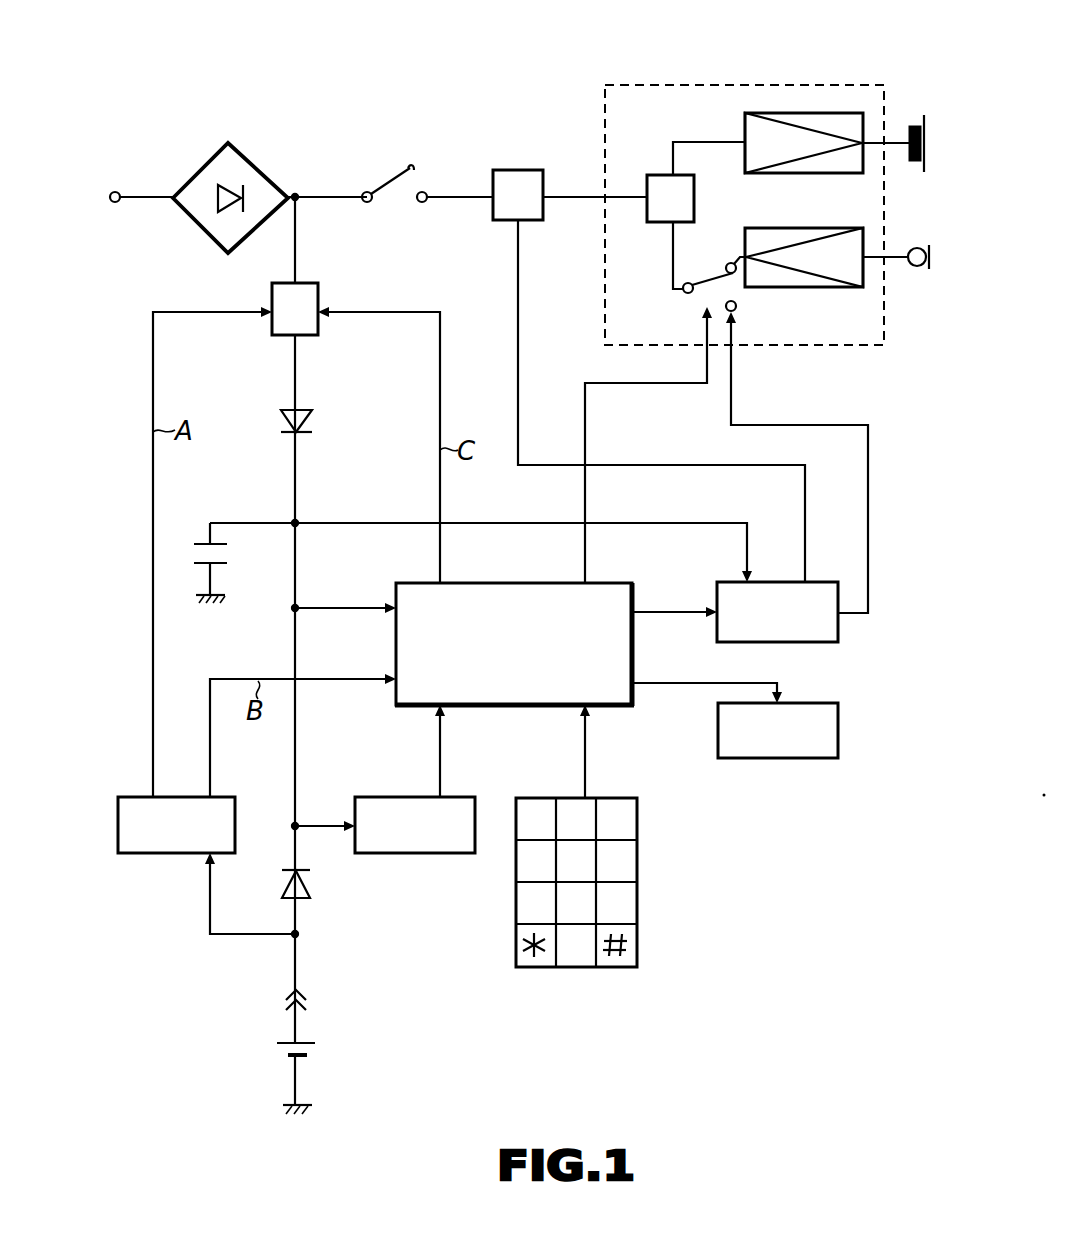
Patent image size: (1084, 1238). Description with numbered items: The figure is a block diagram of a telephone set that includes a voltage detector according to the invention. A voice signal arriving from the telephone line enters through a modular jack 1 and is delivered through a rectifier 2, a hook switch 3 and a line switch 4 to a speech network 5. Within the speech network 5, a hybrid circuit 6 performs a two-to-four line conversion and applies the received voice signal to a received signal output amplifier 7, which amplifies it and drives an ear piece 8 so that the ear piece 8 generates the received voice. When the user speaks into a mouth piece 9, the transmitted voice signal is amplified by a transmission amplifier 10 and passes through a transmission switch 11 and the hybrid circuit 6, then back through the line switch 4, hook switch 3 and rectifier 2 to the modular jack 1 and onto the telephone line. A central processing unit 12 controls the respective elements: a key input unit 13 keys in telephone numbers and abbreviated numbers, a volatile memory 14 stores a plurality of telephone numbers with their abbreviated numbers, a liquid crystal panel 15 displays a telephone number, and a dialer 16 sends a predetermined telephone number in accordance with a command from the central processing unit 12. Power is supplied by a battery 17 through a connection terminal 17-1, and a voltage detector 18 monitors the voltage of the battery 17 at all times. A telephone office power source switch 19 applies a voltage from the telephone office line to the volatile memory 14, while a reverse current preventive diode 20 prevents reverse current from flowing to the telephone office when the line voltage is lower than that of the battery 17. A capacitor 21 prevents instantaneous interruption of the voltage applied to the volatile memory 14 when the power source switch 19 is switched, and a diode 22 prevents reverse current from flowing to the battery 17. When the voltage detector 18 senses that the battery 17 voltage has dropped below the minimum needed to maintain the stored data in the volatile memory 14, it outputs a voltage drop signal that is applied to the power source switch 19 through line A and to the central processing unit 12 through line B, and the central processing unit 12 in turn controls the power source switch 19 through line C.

The modular jack 1 is at (141, 166).
The rectifier 2 is at (230, 187).
The hook switch 3 is at (394, 158).
The line switch 4 is at (518, 169).
The speech network 5 is at (744, 176).
The hybrid circuit 6 is at (658, 160).
The received signal output amplifier 7 is at (795, 160).
The ear piece 8 is at (924, 106).
The mouth piece 9 is at (918, 232).
The transmission amplifier 10 is at (804, 279).
The transmission switch 11 is at (683, 271).
The central processing unit 12 is at (538, 662).
The key input unit 13 is at (603, 882).
The volatile memory 14 is at (415, 850).
The liquid crystal panel 15 is at (801, 734).
The dialer 16 is at (814, 627).
The battery 17 is at (320, 1069).
The connection terminal 17-1 is at (335, 988).
The voltage detector 18 is at (176, 851).
The telephone office power source switch 19 is at (320, 266).
The reverse current preventive diode 20 is at (327, 412).
The capacitor 21 is at (234, 564).
The diode 22 is at (275, 855).